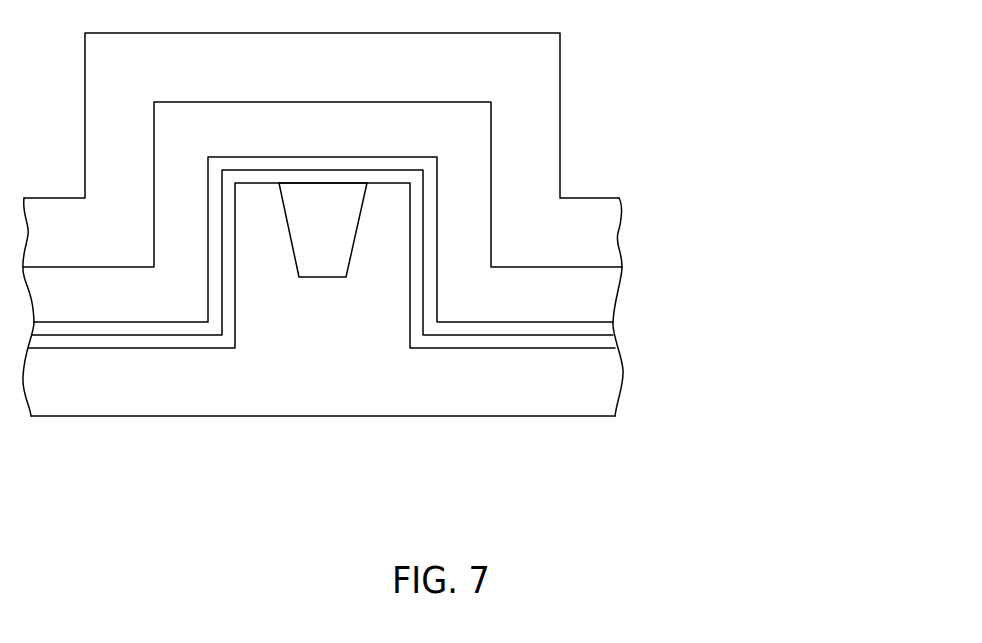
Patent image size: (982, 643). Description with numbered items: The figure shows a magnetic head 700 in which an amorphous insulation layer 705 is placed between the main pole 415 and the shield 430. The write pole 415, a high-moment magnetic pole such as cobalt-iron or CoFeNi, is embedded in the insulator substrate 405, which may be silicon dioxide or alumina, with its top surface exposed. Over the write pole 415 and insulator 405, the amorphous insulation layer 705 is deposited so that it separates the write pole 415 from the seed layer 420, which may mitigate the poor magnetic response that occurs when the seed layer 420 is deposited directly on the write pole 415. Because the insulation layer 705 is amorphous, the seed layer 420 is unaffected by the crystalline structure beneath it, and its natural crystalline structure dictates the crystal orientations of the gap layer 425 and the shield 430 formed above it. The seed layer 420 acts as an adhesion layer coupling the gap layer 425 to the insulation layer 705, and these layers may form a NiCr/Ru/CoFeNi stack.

The magnetic head 700 is at (440, 238).
The shield 430 is at (622, 222).
The gap layer 425 is at (615, 300).
The seed layer 420 is at (612, 327).
The insulation layer 705 is at (615, 341).
The insulator substrate 405 is at (622, 383).
The main pole 415 is at (322, 277).